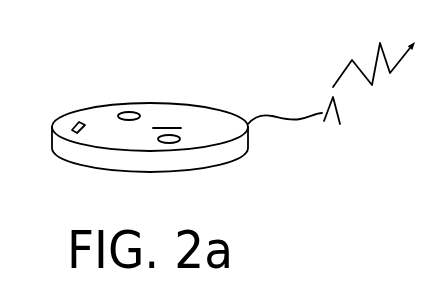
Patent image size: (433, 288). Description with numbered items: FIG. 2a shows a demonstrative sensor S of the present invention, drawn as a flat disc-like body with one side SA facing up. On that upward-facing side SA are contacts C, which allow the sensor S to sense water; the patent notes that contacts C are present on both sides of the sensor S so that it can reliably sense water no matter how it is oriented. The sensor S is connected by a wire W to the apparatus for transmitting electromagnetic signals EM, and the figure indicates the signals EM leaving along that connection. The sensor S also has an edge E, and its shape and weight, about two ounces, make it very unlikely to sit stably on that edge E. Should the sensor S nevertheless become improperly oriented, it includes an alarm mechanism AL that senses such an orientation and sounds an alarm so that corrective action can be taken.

The sensor S is at (220, 101).
The edge E is at (188, 168).
The alarm mechanism AL is at (73, 111).
The side SA is at (167, 118).
The contacts C is at (166, 144).
The wire W is at (280, 123).
The electromagnetic signals EM is at (374, 49).